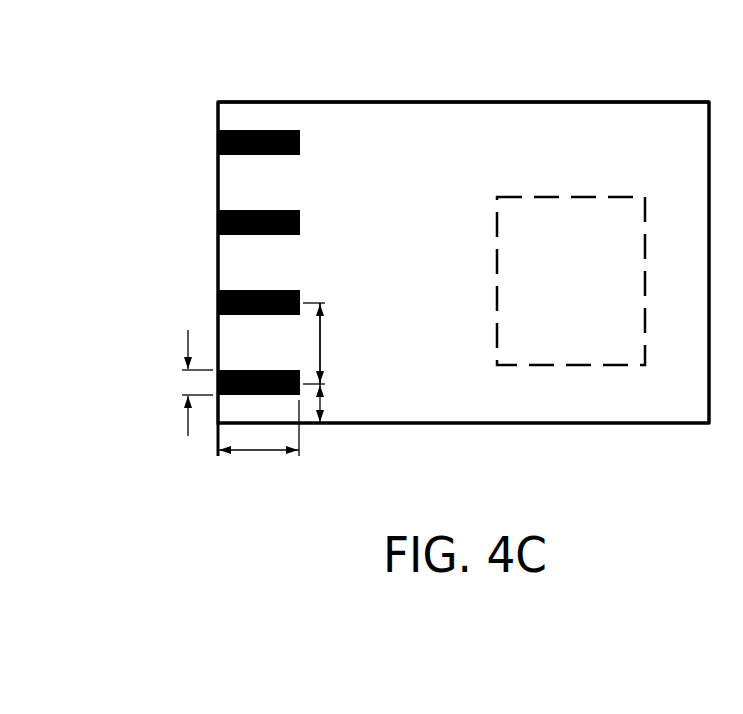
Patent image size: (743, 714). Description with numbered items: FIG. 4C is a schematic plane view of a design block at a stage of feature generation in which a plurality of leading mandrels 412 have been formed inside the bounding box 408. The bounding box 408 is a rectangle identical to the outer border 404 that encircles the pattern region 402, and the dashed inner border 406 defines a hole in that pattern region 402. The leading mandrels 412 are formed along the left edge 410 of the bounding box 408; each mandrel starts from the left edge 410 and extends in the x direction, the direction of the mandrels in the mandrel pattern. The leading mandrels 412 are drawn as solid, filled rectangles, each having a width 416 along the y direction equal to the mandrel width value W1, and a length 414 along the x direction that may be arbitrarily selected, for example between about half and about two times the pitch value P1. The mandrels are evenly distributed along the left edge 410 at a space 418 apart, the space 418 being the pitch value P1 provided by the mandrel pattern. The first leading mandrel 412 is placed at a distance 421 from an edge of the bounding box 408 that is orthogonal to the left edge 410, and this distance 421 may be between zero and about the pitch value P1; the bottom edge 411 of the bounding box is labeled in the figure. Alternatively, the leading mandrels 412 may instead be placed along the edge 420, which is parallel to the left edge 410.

The pattern region 402 is at (558, 114).
The outer border 404 is at (347, 102).
The bounding box 408 is at (347, 102).
The inner border 406 is at (497, 281).
The left edge 410 is at (218, 115).
The leading mandrels 412 is at (218, 140).
The length 414 is at (260, 452).
The width 416 is at (168, 383).
The space 418 is at (325, 350).
The distance 421 is at (322, 410).
The bottom edge 411 is at (496, 427).
The edge 420 is at (709, 318).